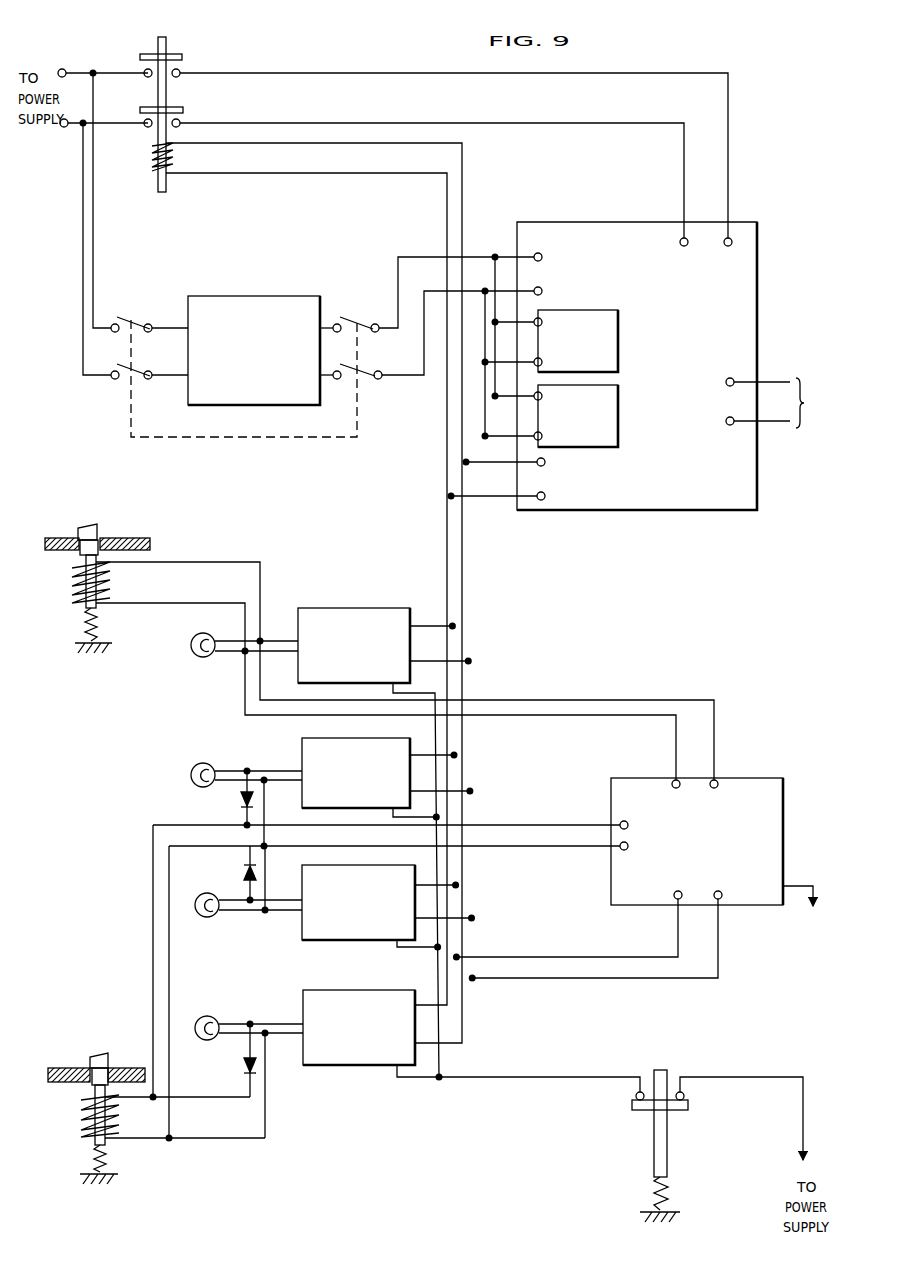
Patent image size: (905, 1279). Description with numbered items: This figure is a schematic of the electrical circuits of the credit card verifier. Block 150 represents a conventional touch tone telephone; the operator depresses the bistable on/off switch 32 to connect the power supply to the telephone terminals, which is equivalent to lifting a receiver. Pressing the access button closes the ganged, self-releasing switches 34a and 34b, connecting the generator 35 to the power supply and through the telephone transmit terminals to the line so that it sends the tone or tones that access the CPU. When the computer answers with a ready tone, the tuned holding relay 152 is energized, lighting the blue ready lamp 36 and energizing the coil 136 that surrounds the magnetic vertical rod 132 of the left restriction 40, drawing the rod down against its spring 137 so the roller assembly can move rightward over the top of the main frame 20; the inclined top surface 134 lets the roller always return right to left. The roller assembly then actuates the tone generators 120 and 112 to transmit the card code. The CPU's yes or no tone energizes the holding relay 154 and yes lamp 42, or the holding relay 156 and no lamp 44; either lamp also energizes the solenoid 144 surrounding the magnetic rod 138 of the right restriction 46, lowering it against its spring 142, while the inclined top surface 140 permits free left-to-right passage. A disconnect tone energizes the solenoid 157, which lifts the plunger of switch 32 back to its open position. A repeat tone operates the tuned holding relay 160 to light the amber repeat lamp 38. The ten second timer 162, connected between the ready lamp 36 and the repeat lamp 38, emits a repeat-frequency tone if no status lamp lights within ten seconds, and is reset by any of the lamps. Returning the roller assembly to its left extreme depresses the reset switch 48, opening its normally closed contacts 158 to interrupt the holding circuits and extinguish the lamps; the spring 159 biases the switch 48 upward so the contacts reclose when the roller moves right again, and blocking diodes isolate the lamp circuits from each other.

The on/off switch 32 is at (174, 52).
The spring 159 is at (157, 135).
The solenoid 157 is at (158, 172).
The touch tone telephone 150 is at (606, 222).
The generator 35 is at (250, 297).
The ganged switch 34a is at (129, 320).
The ganged switch 34b is at (343, 320).
The tone generator 112 is at (576, 341).
The tone generator 120 is at (576, 416).
The left restriction 40 is at (86, 570).
The inclined top surface 134 is at (92, 526).
The main frame 20 is at (124, 540).
The solenoid or coil 136 is at (72, 585).
The spring 137 is at (84, 625).
The vertical rod 132 is at (98, 607).
The ready lamp 36 is at (193, 655).
The tuned relay 152 is at (354, 636).
The yes lamp 42 is at (192, 766).
The holding relay 154 is at (355, 764).
The no lamp 44 is at (206, 893).
The holding relay 156 is at (348, 902).
The repeat lamp 38 is at (206, 1016).
The tuned holding relay 160 is at (357, 1018).
The ten second timer 162 is at (766, 780).
The right restriction 46 is at (86, 1112).
The inclined top surface 140 is at (92, 1060).
The magnetic rod 138 is at (86, 1097).
The solenoid or coil 144 is at (88, 1134).
The spring 142 is at (90, 1162).
The reset switch 48 is at (668, 1072).
The contacts 158 is at (682, 1105).